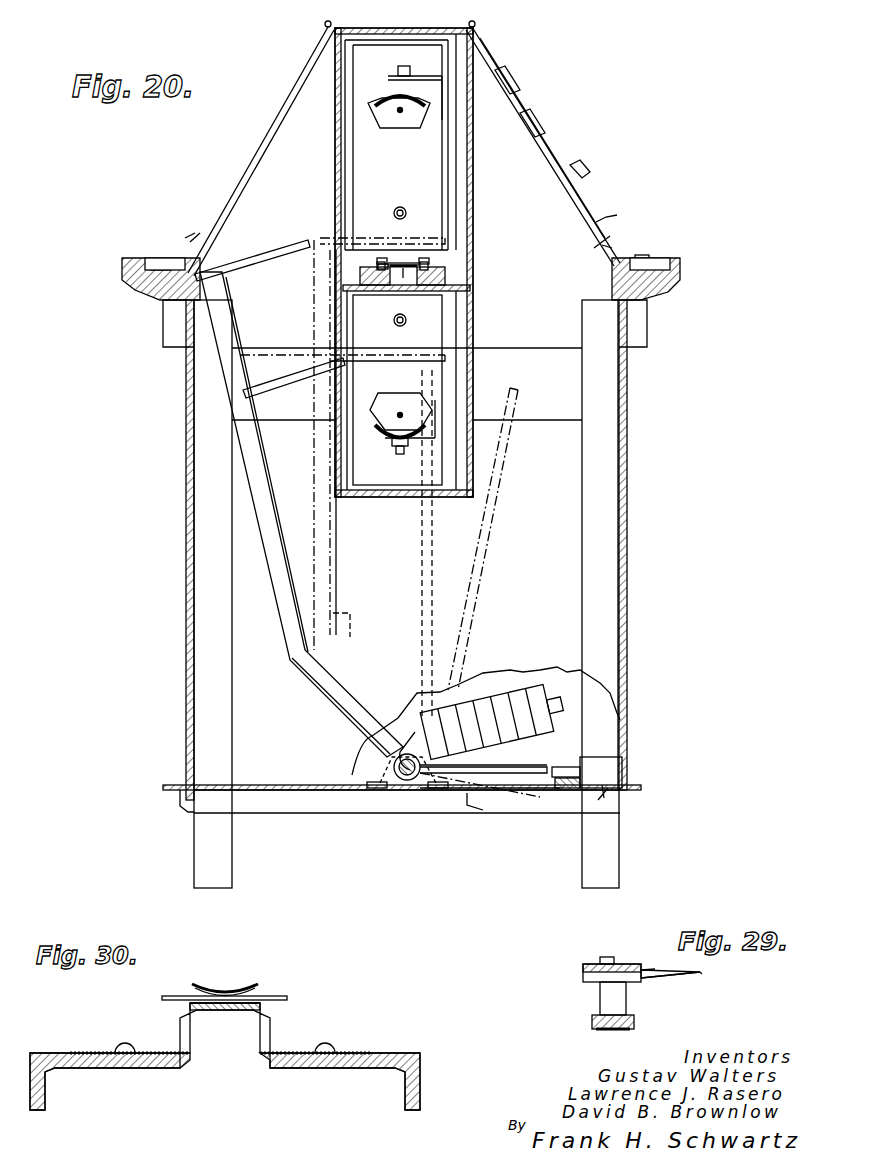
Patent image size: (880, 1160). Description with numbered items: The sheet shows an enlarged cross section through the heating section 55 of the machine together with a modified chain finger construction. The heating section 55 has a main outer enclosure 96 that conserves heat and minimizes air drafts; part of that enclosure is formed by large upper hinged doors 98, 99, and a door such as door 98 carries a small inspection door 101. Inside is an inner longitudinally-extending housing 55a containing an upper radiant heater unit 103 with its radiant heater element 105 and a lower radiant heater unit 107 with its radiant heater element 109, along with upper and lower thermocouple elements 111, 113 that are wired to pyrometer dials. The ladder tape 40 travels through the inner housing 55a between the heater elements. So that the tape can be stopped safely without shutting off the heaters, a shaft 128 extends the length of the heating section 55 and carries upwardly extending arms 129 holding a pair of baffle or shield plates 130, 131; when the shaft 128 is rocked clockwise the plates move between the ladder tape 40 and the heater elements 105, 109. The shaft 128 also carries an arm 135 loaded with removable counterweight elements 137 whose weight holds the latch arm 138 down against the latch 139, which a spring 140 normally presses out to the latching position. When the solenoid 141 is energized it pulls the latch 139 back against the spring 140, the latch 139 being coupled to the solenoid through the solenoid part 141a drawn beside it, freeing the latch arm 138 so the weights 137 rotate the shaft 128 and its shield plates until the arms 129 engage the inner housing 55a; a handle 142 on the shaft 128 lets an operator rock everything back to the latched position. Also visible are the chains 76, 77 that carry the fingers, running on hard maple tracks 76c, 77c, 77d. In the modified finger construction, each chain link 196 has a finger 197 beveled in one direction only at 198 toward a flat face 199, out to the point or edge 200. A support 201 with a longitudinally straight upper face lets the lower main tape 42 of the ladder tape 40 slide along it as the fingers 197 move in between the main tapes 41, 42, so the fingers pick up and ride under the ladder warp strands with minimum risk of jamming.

In FIG. 20, the heating section 55 is at (172, 535).
In FIG. 20, the inner longitudinally-extending housing 55a is at (335, 183).
In FIG. 20, the main outer enclosure 96 is at (186, 595).
In FIG. 20, the upper hinged door 98 is at (598, 208).
In FIG. 20, the upper hinged door 99 is at (258, 128).
In FIG. 20, the inspection door 101 is at (550, 136).
In FIG. 20, the upper radiant heater unit 103 is at (388, 96).
In FIG. 20, the radiant heater element 105 is at (400, 113).
In FIG. 20, the lower radiant heater unit 107 is at (382, 428).
In FIG. 20, the radiant heater element 109 is at (400, 412).
In FIG. 20, the thermocouple element 111 is at (396, 212).
In FIG. 20, the thermocouple element 113 is at (394, 320).
In FIG. 20, the ladder tape 40 is at (405, 264).
In FIG. 30, the ladder tape 40 is at (239, 984).
In FIG. 20, the main tape 41 is at (395, 262).
In FIG. 30, the main tape 41 is at (205, 982).
In FIG. 20, the lower main tape 42 is at (402, 281).
In FIG. 30, the lower main tape 42 is at (190, 1008).
In FIG. 20, the chain 76 is at (385, 260).
In FIG. 20, the chain track 76c is at (672, 258).
In FIG. 20, the chain 77 is at (375, 264).
In FIG. 20, the chain track 77c is at (130, 258).
In FIG. 20, the chain track 77d is at (425, 264).
In FIG. 20, the shaft 128 is at (405, 780).
In FIG. 20, the upwardly extending arm 129 is at (280, 618).
In FIG. 20, the baffle or shield plate 130 is at (283, 250).
In FIG. 20, the baffle or shield plate 131 is at (295, 372).
In FIG. 20, the arm 135 is at (570, 708).
In FIG. 20, the counterweight element 137 is at (510, 688).
In FIG. 20, the latch arm 138 is at (545, 757).
In FIG. 20, the latch 139 is at (545, 792).
In FIG. 20, the spring 140 is at (570, 792).
In FIG. 20, the solenoid 141 is at (605, 768).
In FIG. 20, the gear box shaft 141a is at (575, 768).
In FIG. 20, the handle 142 is at (420, 648).
In FIG. 29, the chain link 196 is at (583, 975).
In FIG. 30, the finger 197 is at (165, 996).
In FIG. 29, the finger 197 is at (650, 968).
In FIG. 29, the bevel 198 is at (685, 970).
In FIG. 29, the flat face 199 is at (665, 980).
In FIG. 29, the point or edge 200 is at (700, 972).
In FIG. 30, the support 201 is at (240, 1012).